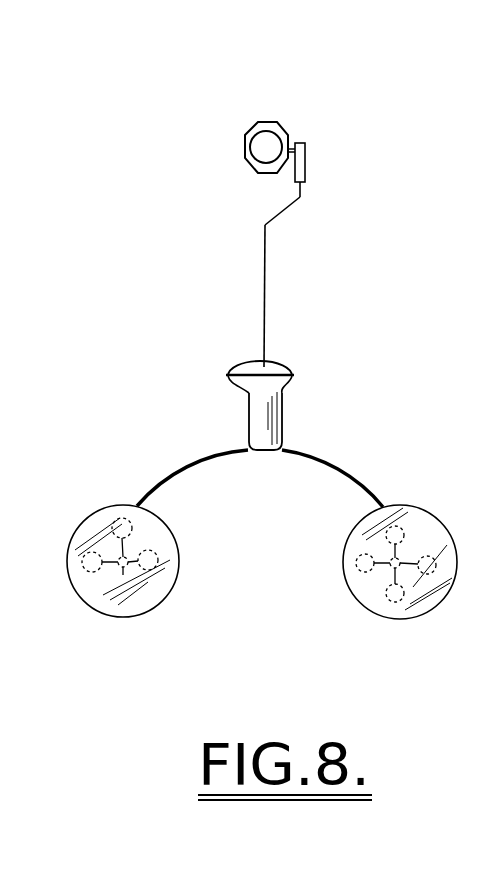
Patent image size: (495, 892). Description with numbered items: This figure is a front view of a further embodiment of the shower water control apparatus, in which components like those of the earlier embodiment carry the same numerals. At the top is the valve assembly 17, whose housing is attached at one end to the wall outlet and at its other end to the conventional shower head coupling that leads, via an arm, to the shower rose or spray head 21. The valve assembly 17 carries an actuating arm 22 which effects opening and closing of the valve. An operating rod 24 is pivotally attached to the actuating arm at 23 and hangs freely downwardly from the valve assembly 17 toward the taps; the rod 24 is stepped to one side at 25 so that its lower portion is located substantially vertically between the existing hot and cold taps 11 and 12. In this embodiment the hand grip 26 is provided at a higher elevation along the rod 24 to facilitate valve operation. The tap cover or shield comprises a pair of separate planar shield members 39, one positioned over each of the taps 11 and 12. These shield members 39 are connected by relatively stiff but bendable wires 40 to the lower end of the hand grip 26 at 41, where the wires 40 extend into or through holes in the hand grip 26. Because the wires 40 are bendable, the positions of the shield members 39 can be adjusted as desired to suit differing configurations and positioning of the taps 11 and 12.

The valve assembly 17 is at (263, 118).
The shower rose or spray head 21 is at (295, 140).
The actuating arm 22 is at (307, 160).
The pivot attachment 23 is at (305, 181).
The step 25 is at (277, 212).
The operating rod 24 is at (268, 307).
The hand grip 26 is at (240, 388).
The wire connection point 41 is at (288, 431).
The bendable wires 40 is at (172, 461).
The planar shield members 39 is at (182, 537).
The hot tap 11 is at (160, 590).
The cold tap 12 is at (368, 586).